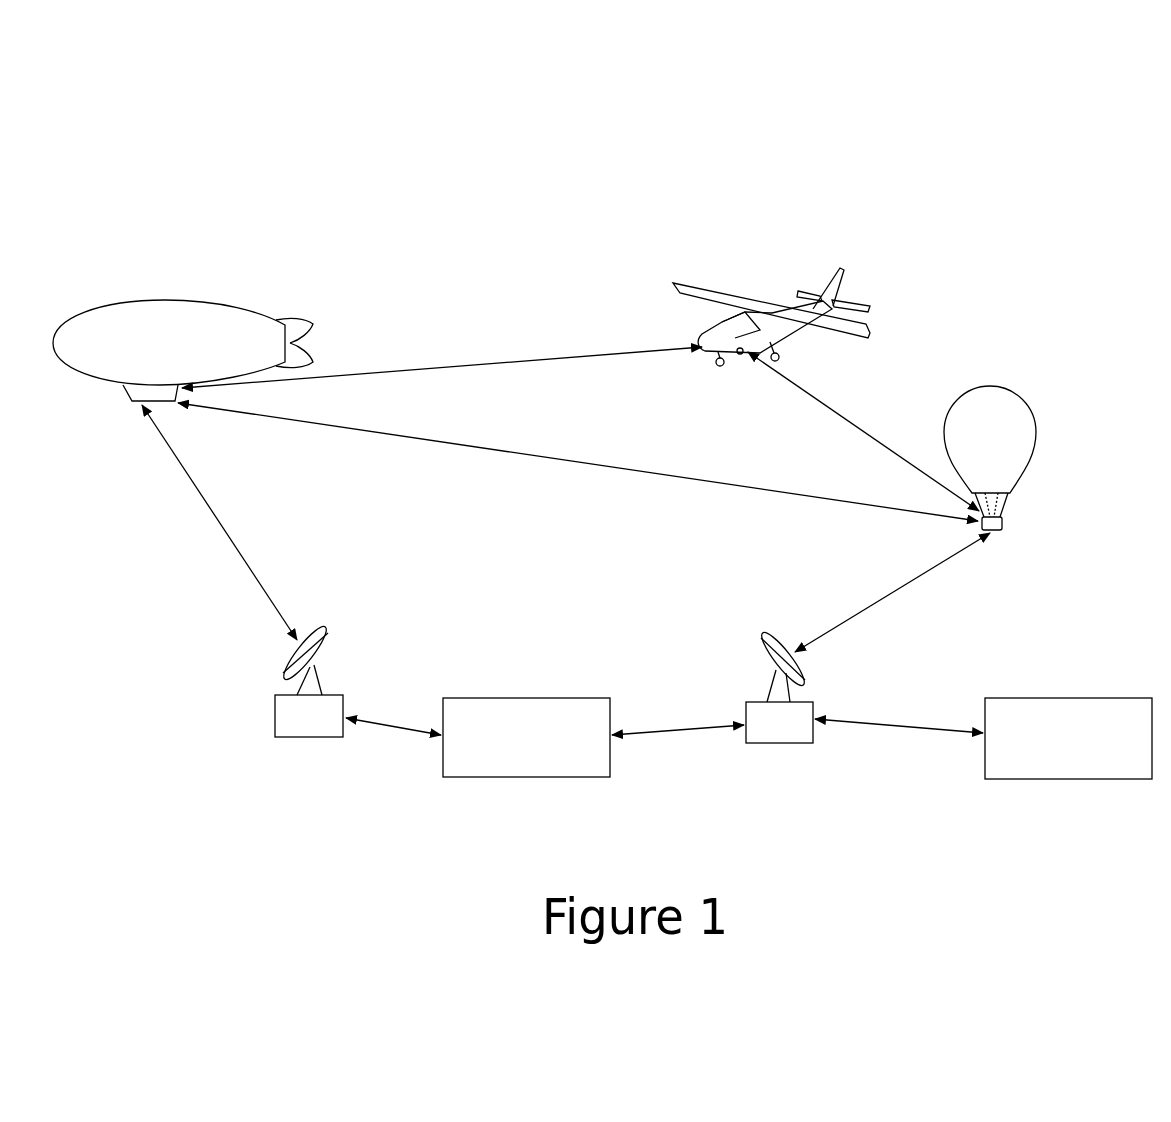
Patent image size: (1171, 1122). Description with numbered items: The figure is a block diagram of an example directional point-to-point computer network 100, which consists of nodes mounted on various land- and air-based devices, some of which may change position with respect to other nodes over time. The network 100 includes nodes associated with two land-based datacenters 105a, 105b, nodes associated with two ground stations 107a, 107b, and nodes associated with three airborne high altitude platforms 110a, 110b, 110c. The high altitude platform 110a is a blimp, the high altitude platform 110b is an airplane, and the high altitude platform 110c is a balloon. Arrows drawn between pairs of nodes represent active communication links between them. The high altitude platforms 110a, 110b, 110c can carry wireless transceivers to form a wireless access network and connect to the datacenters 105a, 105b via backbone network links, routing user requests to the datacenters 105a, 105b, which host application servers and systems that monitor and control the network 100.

The directional point-to-point computer network 100 is at (650, 50).
The land-based datacenter 105a is at (526, 737).
The land-based datacenter 105b is at (1068, 738).
The ground station 107a is at (309, 679).
The ground station 107b is at (779, 685).
The high altitude platform (blimp) 110a is at (165, 312).
The high altitude platform (airplane) 110b is at (741, 300).
The high altitude platform (balloon) 110c is at (1000, 405).